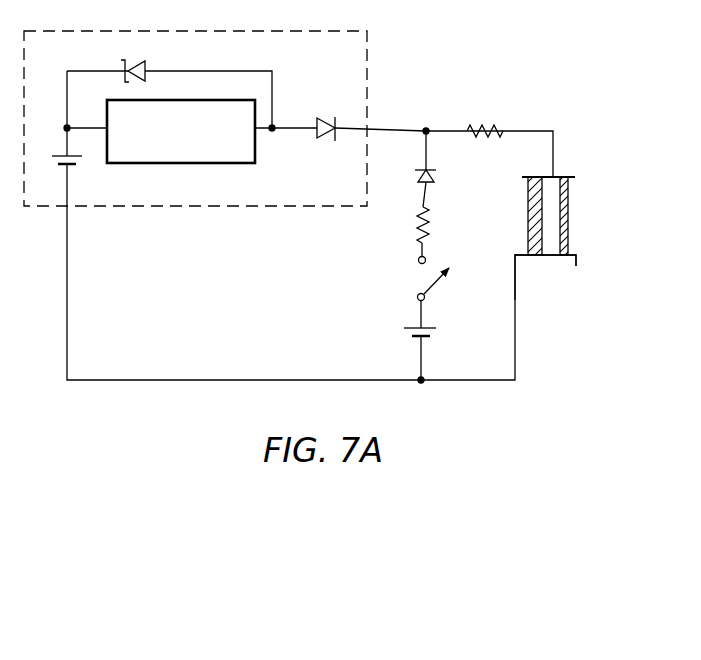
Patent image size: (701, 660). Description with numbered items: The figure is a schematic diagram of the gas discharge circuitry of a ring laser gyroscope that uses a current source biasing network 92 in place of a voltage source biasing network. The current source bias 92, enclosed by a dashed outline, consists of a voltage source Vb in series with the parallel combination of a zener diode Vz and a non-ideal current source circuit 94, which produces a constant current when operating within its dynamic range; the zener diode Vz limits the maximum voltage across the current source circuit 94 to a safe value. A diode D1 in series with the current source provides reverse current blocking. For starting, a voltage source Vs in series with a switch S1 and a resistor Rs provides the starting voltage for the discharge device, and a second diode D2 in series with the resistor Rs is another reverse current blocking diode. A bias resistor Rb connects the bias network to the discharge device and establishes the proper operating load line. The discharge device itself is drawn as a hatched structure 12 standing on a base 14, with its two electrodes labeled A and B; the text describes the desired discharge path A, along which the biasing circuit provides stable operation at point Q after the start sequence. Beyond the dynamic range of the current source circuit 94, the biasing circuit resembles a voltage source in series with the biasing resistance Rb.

The current source biasing network 92 is at (287, 210).
The non-ideal current source circuit 94 is at (207, 100).
The electrochemical cell 12 is at (553, 216).
The base / substrate 14 is at (577, 264).
The discharge path A is at (527, 212).
The electrode B is at (569, 212).
The diode D1 is at (334, 117).
The diode D2 is at (436, 178).
The bias resistor Rb is at (490, 116).
The resistor Rs is at (437, 225).
The switch S1 is at (427, 277).
The voltage source Vb is at (54, 156).
The voltage source Vs is at (431, 334).
The zener diode Vz is at (136, 63).